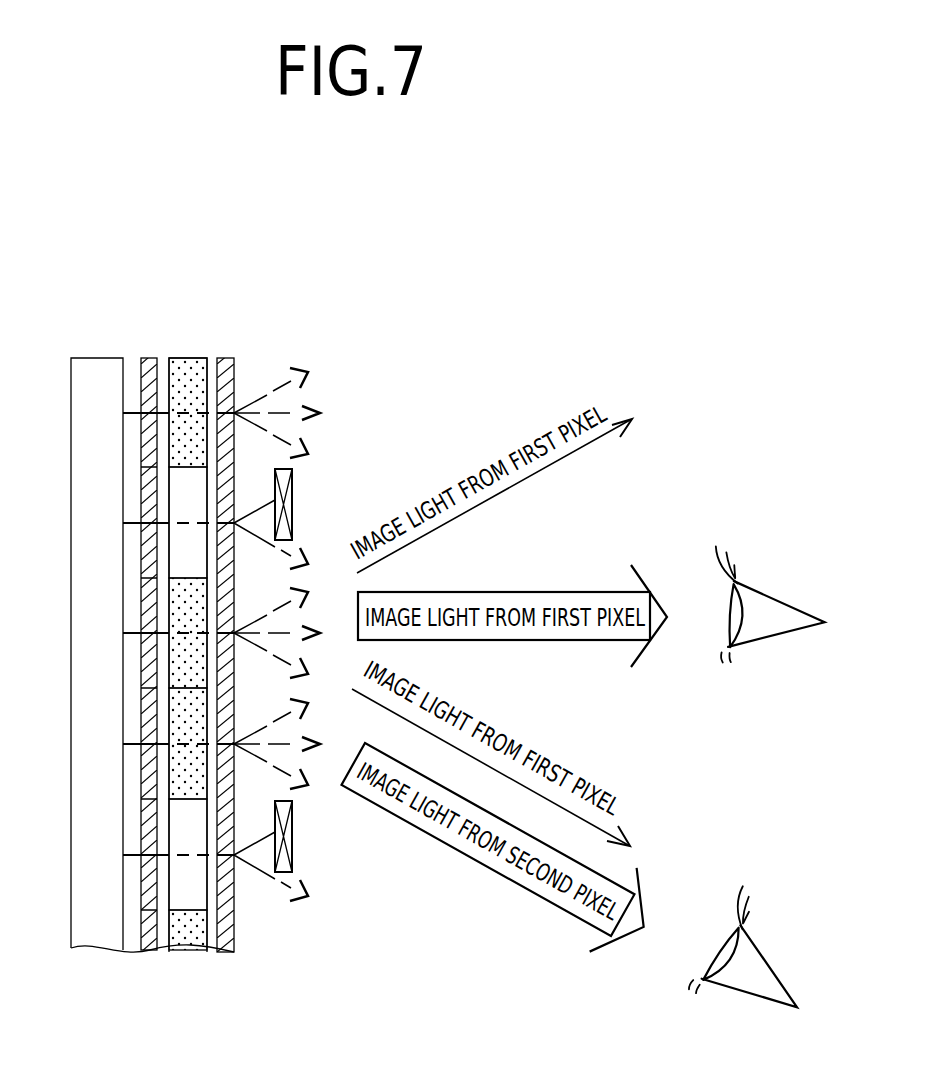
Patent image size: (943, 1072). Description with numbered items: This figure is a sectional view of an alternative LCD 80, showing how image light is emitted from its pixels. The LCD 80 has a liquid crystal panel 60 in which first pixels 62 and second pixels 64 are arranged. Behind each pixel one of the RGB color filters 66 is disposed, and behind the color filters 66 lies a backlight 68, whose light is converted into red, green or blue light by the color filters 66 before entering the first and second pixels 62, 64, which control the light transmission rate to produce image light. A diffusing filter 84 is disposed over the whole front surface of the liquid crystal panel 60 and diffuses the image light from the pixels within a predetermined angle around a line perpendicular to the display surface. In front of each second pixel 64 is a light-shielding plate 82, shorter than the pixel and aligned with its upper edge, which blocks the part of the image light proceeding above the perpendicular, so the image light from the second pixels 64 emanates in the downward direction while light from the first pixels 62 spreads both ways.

The liquid crystal panel 60 is at (188, 358).
The first pixels 62 is at (170, 358).
The second pixels 64 is at (202, 565).
The RGB color filters 66 is at (141, 380).
The backlight 68 is at (83, 358).
The LCD 80 is at (322, 336).
The light-shielding plates 82 is at (293, 503).
The diffusing filter 84 is at (230, 358).